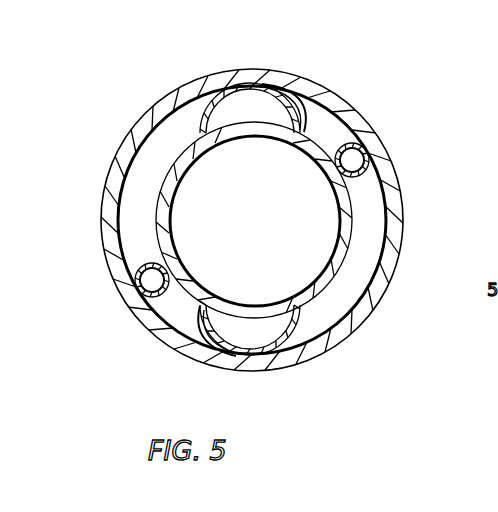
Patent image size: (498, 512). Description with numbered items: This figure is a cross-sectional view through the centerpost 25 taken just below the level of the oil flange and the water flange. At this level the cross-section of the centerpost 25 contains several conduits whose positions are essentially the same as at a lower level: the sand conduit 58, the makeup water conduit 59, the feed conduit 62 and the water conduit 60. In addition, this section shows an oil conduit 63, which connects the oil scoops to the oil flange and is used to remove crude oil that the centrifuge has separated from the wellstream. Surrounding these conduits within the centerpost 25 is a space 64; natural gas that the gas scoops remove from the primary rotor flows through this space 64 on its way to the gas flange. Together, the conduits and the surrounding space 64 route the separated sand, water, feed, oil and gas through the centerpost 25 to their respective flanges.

The centerpost 25 is at (180, 87).
The sand conduit 58 is at (124, 262).
The makeup water conduit 59 is at (370, 168).
The water conduit 60 is at (307, 75).
The feed conduit 62 is at (353, 230).
The oil conduit 63 is at (303, 332).
The space 64 is at (325, 128).